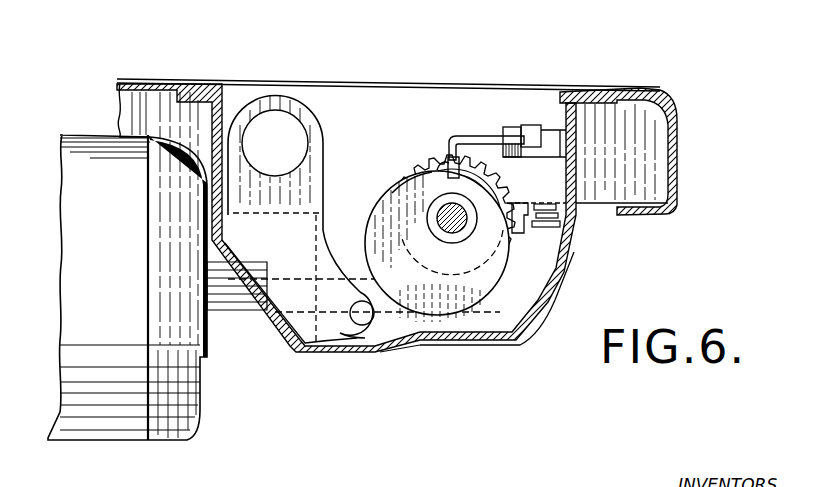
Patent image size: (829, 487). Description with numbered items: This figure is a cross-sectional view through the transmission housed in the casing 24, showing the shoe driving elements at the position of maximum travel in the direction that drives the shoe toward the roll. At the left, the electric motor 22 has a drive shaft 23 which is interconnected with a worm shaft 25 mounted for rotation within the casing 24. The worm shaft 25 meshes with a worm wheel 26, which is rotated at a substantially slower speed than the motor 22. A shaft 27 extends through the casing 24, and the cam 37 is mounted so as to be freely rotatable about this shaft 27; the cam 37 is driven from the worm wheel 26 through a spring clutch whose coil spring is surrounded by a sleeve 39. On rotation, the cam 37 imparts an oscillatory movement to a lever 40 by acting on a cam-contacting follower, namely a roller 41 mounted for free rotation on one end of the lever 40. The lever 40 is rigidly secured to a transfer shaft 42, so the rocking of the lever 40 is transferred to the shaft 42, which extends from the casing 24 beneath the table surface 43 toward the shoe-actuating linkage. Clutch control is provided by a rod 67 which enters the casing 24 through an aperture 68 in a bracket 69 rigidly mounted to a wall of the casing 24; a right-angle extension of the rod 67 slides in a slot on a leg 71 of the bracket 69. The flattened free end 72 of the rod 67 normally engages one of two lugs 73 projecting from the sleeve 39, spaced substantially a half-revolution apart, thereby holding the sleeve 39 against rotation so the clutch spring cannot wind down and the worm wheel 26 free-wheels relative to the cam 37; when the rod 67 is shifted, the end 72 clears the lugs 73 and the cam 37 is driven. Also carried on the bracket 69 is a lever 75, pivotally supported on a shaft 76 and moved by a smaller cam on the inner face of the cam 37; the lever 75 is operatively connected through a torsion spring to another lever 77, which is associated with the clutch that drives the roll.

The electric motor 22 is at (173, 373).
The drive shaft 23 is at (242, 300).
The casing 24 is at (335, 352).
The worm shaft 25 is at (457, 327).
The worm wheel 26 is at (412, 176).
The shaft 27 is at (446, 224).
The cam 37 is at (372, 214).
The sleeve 39 is at (487, 194).
The lever 40 is at (318, 190).
The roller 41 is at (380, 327).
The transfer shaft 42 is at (300, 130).
The table surface 43 is at (159, 79).
The rod 67 is at (472, 138).
The aperture 68 is at (525, 140).
The bracket 69 is at (523, 130).
The leg 71 is at (503, 128).
The free end 72 is at (450, 160).
The lugs 73 is at (440, 166).
The lever 75 is at (523, 223).
The shaft 76 is at (560, 238).
The lever 77 is at (556, 217).